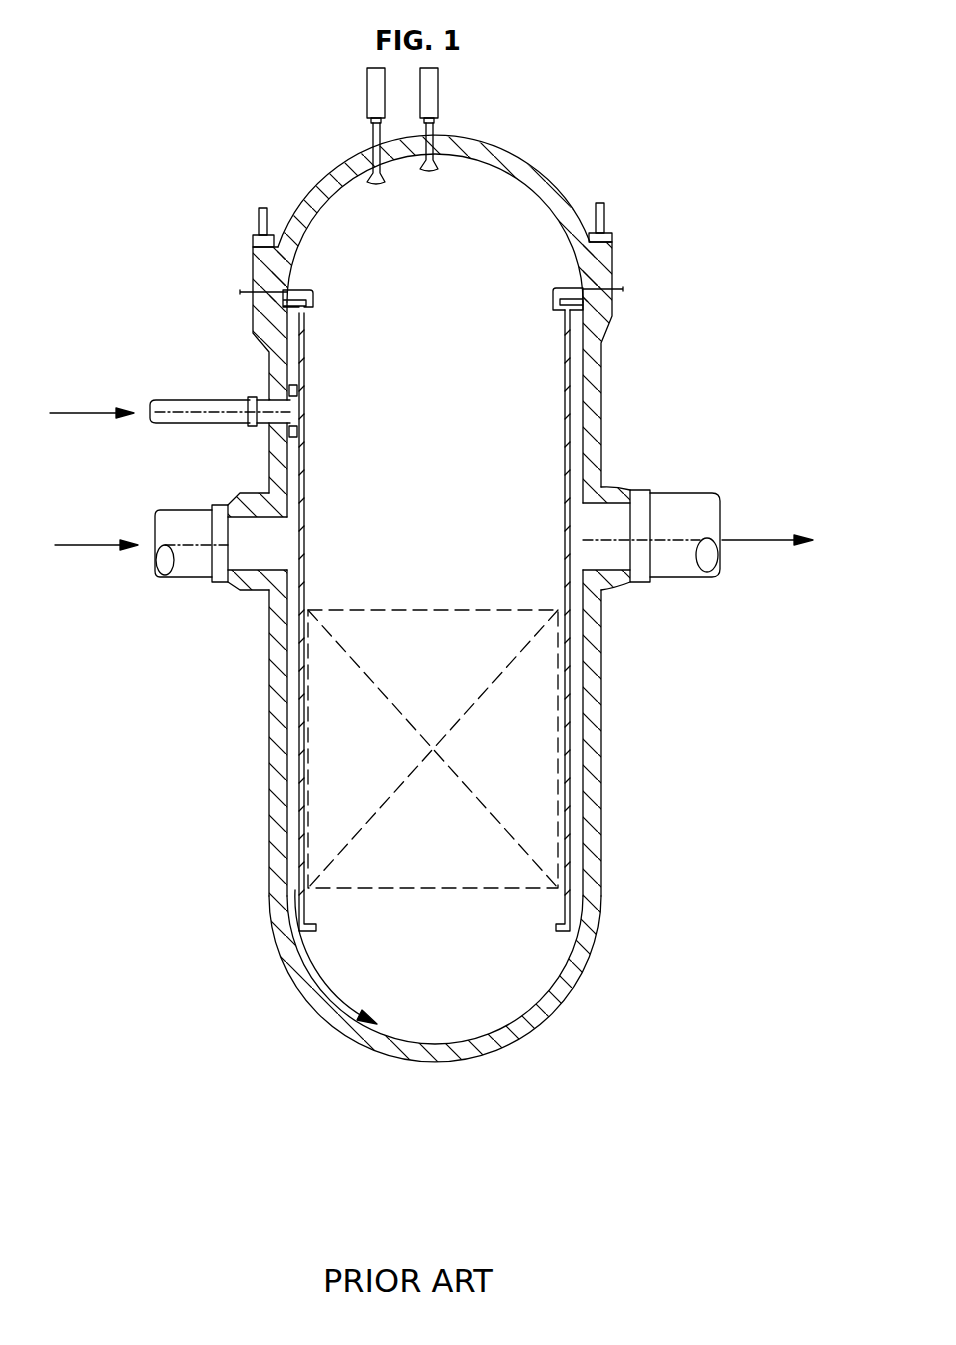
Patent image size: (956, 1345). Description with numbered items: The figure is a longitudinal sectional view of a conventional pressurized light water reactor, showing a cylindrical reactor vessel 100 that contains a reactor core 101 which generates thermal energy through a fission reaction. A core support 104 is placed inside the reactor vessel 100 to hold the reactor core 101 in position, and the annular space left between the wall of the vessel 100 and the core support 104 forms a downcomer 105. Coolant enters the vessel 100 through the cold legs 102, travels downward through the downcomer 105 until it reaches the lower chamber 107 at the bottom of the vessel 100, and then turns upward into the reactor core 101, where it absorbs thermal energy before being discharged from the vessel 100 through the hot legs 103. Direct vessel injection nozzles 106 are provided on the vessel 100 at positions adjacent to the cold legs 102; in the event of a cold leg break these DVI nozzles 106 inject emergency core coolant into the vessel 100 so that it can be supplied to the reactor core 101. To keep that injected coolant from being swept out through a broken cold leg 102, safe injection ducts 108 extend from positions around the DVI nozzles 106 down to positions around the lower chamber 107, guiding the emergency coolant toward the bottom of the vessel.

The reactor vessel 100 is at (270, 690).
The reactor core 101 is at (418, 612).
The cold legs 102 is at (193, 566).
The hot legs 103 is at (682, 558).
The core support 104 is at (305, 460).
The downcomer 105 is at (292, 753).
The direct vessel injection (DVI) nozzles 106 is at (190, 398).
The lower chamber 107 is at (402, 1027).
The safe injection ducts 108 is at (287, 480).